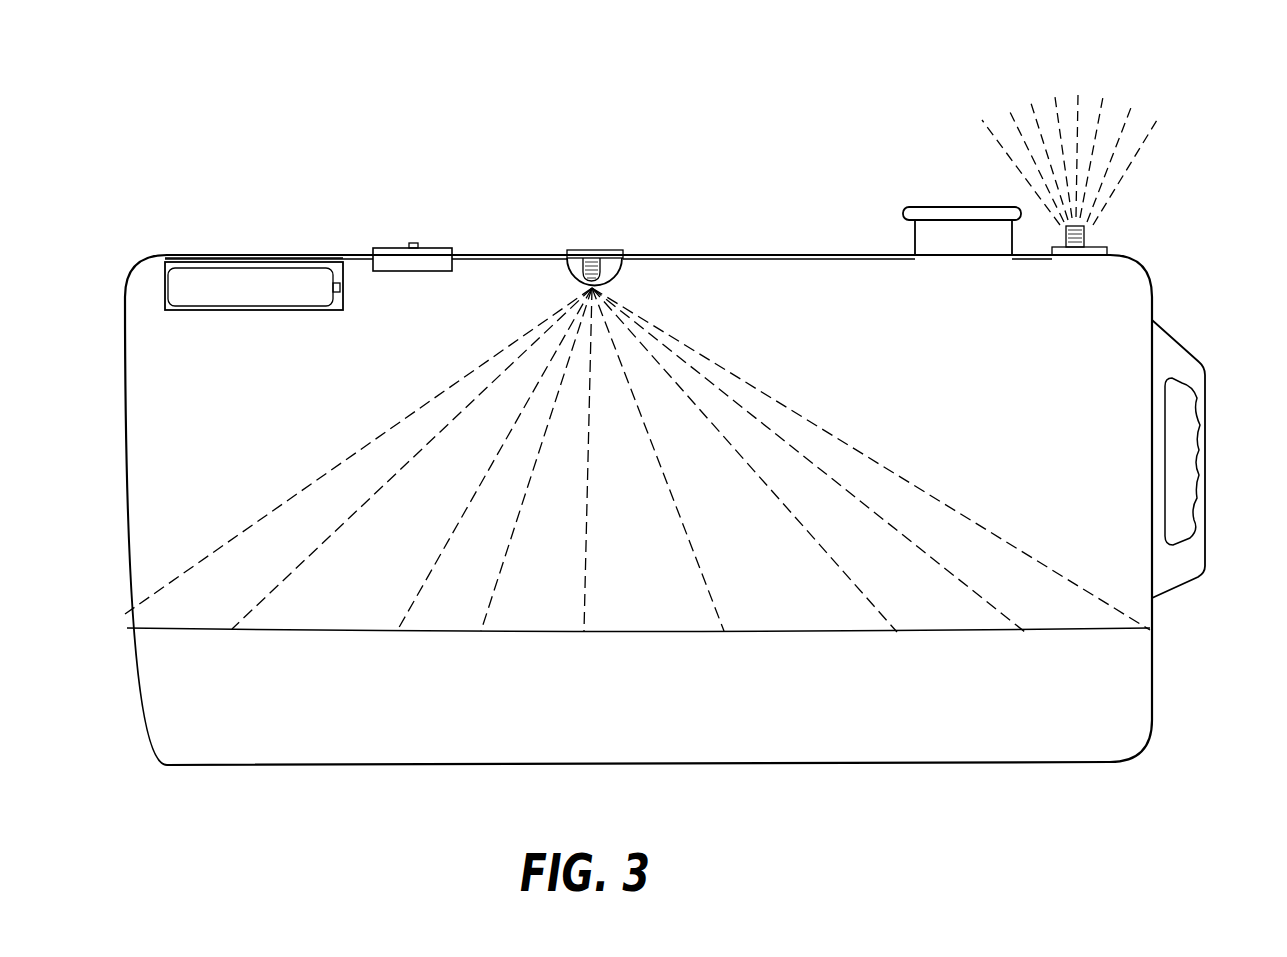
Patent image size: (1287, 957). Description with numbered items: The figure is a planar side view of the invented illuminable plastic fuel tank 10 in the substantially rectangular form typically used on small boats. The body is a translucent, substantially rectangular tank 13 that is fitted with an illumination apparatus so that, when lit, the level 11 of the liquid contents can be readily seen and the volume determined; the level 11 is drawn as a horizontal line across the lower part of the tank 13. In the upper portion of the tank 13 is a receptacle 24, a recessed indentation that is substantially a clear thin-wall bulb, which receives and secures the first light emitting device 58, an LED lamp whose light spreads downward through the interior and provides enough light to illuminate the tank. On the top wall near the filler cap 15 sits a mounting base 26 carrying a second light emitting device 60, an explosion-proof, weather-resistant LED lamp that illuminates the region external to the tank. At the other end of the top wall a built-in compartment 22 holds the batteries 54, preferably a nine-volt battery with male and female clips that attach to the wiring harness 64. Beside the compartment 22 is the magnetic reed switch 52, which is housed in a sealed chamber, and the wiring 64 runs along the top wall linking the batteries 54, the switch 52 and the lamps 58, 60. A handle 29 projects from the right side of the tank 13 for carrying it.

The illuminable plastic fuel tank 10 is at (654, 176).
The level 11 is at (205, 628).
The substantially rectangular tank 13 is at (1018, 377).
The fill cap 15 is at (933, 242).
The built-in compartment 22 is at (232, 257).
The receptacle 24 is at (622, 256).
The mounting base 26 is at (1104, 249).
The handle 29 is at (1172, 360).
The magnetic reed switch 52 is at (410, 256).
The batteries 54 is at (182, 292).
The first light emitting device 58 is at (581, 259).
The second light emitting devices 60 is at (1088, 215).
The wiring harness 64 is at (357, 257).